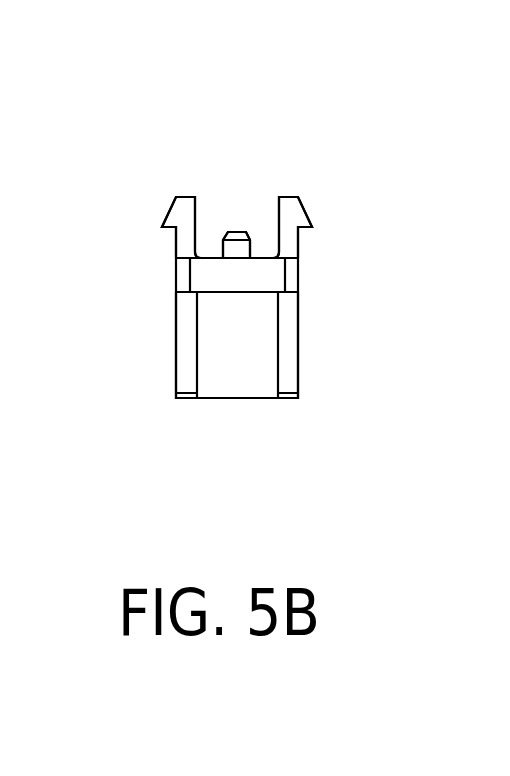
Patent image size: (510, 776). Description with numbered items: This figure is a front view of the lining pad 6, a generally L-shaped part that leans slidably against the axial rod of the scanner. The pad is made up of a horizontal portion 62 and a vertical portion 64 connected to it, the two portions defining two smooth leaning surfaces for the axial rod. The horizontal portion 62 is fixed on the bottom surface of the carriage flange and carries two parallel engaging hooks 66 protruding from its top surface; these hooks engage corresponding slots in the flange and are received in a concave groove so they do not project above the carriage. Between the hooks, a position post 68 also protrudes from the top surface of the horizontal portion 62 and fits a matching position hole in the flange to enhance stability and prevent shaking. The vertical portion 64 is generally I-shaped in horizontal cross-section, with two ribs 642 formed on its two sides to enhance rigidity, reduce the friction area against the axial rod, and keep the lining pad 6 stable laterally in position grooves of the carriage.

The lining pad 6 is at (233, 262).
The horizontal portion 62 is at (252, 278).
The vertical portion 64 is at (242, 380).
The ribs 642 is at (188, 345).
The engaging hooks 66 is at (167, 213).
The position post 68 is at (237, 232).